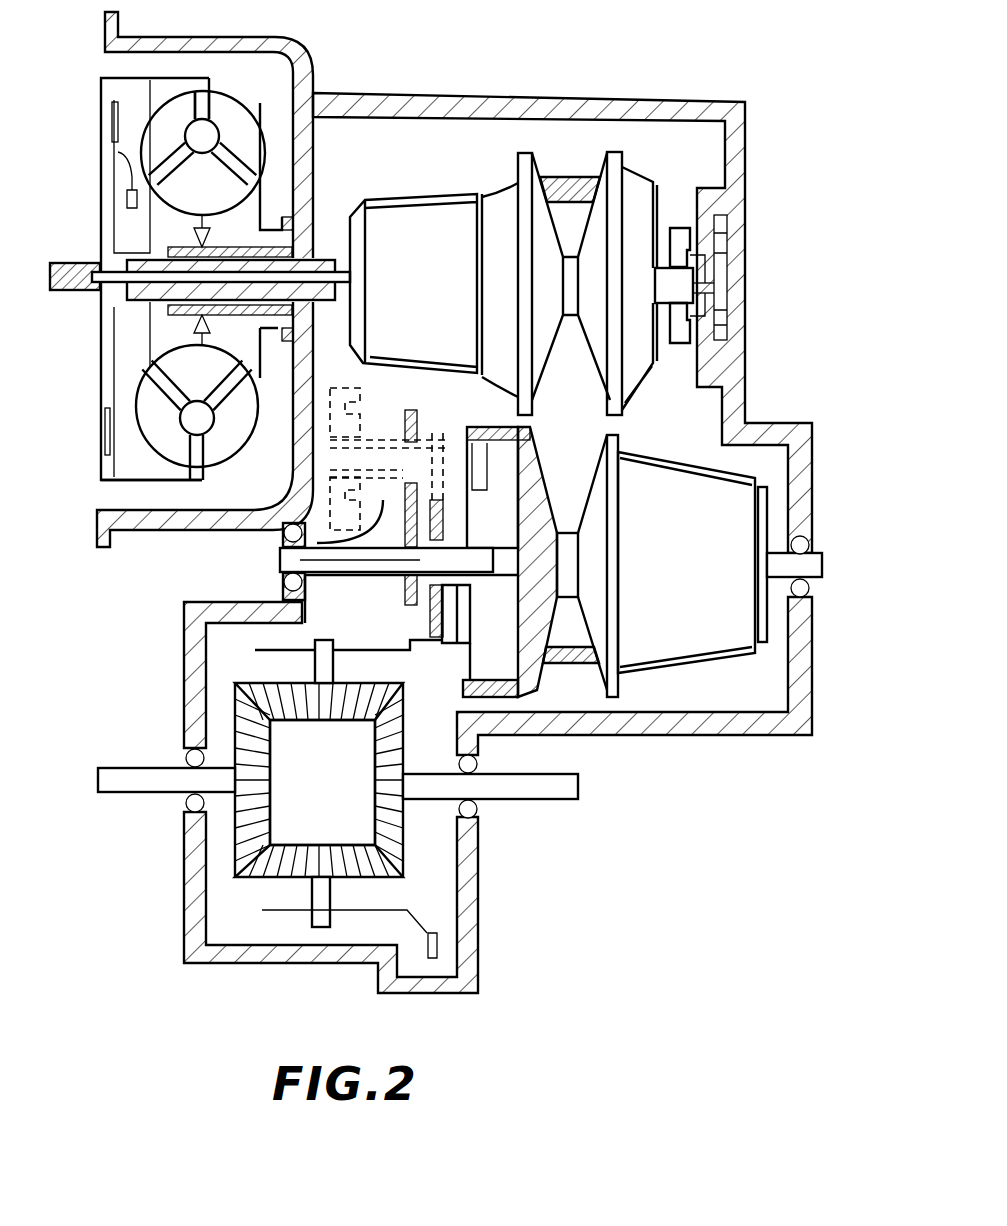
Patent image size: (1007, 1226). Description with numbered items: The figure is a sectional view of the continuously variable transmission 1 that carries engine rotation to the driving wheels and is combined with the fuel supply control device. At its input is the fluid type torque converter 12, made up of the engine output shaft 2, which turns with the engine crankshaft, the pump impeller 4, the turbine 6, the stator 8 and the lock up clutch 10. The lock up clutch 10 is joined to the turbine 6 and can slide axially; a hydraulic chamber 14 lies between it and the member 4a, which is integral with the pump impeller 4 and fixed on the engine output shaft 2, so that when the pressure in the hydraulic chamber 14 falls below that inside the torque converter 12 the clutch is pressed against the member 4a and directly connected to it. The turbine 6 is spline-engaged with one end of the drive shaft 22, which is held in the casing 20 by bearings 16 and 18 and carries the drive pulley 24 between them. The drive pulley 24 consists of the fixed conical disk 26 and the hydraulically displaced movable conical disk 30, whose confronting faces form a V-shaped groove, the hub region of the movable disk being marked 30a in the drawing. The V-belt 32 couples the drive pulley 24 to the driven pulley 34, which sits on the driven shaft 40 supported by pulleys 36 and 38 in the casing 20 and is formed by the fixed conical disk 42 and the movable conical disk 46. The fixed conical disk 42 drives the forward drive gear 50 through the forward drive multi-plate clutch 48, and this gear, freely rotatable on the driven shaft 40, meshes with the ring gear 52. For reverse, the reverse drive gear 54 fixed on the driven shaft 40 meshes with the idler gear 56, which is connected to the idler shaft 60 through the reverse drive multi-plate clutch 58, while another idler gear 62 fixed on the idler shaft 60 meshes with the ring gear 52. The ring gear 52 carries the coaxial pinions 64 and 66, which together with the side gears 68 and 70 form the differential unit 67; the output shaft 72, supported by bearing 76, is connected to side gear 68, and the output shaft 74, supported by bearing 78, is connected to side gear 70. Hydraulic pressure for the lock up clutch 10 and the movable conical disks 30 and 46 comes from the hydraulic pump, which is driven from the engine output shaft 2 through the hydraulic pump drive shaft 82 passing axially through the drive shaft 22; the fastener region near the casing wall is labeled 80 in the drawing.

The continuously variable transmission 1 is at (828, 162).
The engine output shaft 2 is at (70, 267).
The pump impeller 4 is at (260, 127).
The member integral with the pump impeller 4a is at (97, 398).
The turbine 6 is at (157, 110).
The stator 8 is at (207, 192).
The lock up clutch 10 is at (115, 115).
The torque converter 12 is at (97, 477).
The hydraulic chamber 14 is at (107, 178).
The bearing 16 is at (330, 208).
The bearing 18 is at (680, 227).
The casing 20 is at (748, 118).
The drive shaft 22 is at (363, 300).
The drive pulley 24 is at (623, 152).
The fixed conical disk 26 is at (640, 167).
The movable conical disk 30 is at (527, 153).
The sheave hub 30a is at (480, 213).
The V-belt 32 is at (560, 177).
The driven pulley 34 is at (568, 680).
The pulley (bearing) supporting the driven shaft 36 is at (283, 583).
The pulley (bearing) supporting the driven shaft 38 is at (815, 550).
The driven shaft 40 is at (473, 550).
The fixed conical disk 42 is at (507, 697).
The movable conical disk 46 is at (618, 435).
The forward drive multi-plate clutch 48 is at (480, 641).
The forward drive gear 50 is at (430, 600).
The ring gear 52 is at (440, 650).
The reverse drive gear 54 is at (403, 590).
The idler gear 56 is at (410, 408).
The reverse drive multi-plate clutch 58 is at (339, 383).
The idler shaft 60 is at (280, 540).
The idler gear 62 is at (447, 437).
The pinion 64 is at (293, 682).
The pinion 66 is at (380, 883).
The differential unit 67 is at (242, 886).
The side gear 68 is at (260, 745).
The side gear 70 is at (380, 800).
The output shaft 72 is at (137, 793).
The output shaft 74 is at (555, 800).
The bearing 76 is at (185, 750).
The bearing 78 is at (480, 810).
The bolt 80 is at (746, 218).
The hydraulic pump drive shaft 82 is at (105, 307).